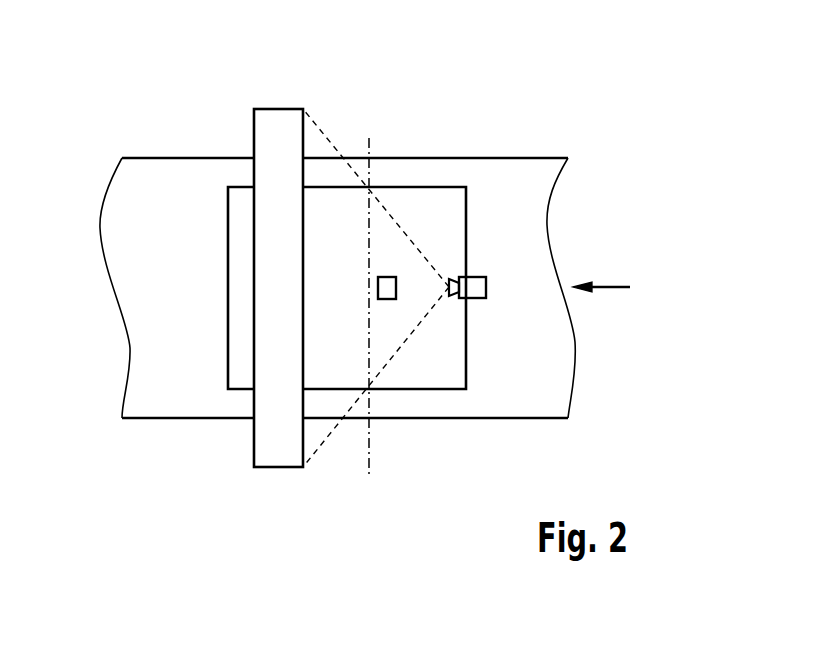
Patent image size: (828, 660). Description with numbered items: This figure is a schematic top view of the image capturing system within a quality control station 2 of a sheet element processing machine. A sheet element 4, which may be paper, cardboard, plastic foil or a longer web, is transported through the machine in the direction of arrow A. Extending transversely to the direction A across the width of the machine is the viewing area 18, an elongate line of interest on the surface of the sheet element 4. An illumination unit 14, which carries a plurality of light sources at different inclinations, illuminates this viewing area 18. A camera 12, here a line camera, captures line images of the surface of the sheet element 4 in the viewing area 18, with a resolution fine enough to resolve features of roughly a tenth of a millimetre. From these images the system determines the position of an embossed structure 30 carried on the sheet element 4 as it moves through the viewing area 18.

The quality control station 2 is at (406, 116).
The sheet element 4 is at (232, 290).
The camera 12 is at (486, 287).
The illumination unit 14 is at (279, 118).
The viewing area 18 is at (369, 466).
The embossed structure 30 is at (385, 277).
The direction of transport A is at (613, 287).